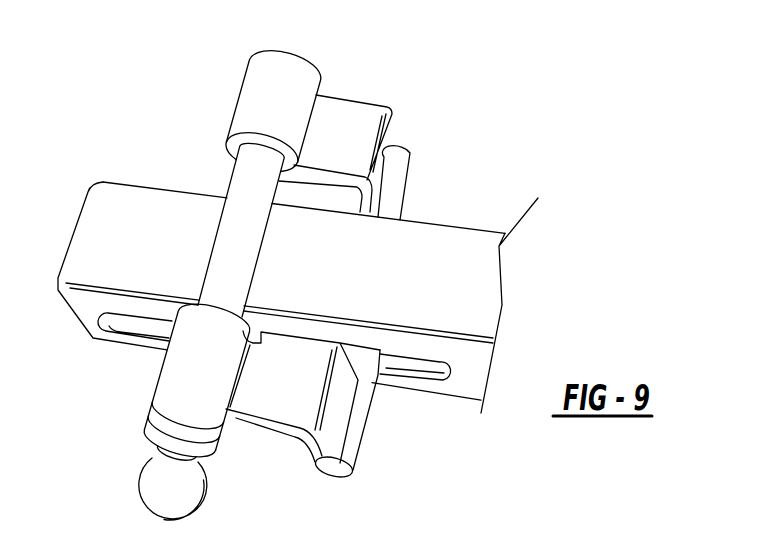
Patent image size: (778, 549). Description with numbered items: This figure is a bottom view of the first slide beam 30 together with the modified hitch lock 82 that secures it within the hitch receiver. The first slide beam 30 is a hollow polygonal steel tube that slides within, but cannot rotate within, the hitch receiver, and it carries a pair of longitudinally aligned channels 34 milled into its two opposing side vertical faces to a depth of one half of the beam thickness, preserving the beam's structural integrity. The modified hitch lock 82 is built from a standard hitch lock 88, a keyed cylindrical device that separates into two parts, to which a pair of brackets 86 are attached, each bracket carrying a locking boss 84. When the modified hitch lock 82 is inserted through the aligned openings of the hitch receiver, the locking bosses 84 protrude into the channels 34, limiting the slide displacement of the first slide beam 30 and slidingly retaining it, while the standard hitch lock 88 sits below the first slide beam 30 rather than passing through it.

The first slide beam 30 is at (470, 229).
The channels 34 is at (427, 379).
The modified hitch lock 82 is at (335, 495).
The locking bosses 84 is at (408, 168).
The brackets 86 is at (348, 99).
The standard hitch lock 88 is at (240, 95).